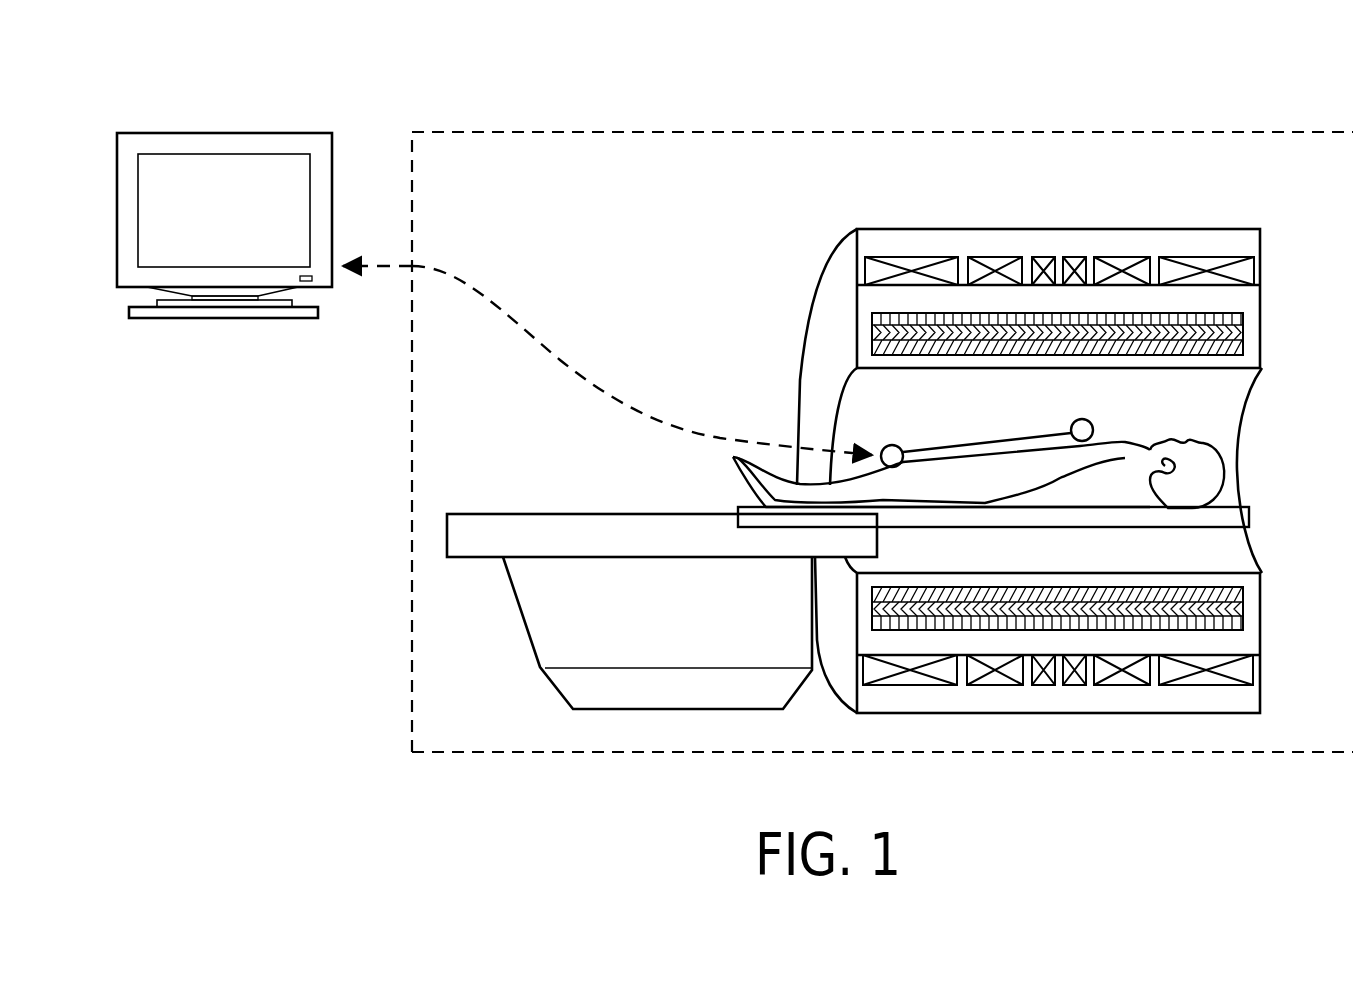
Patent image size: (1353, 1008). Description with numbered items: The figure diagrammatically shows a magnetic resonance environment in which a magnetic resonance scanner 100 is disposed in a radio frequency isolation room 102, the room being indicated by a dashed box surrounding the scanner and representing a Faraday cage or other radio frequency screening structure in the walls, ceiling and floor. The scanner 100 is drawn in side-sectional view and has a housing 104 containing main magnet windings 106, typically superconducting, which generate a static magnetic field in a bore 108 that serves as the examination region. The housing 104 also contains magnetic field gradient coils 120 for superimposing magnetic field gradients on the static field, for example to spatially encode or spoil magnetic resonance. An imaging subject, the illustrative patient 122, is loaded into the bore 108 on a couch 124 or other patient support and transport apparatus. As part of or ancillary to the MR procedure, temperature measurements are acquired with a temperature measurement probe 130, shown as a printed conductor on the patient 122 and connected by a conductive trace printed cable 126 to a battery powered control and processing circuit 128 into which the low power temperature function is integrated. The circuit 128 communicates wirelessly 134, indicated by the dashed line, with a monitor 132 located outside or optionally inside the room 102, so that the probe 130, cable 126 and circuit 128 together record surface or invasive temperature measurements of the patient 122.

The magnetic resonance scanner 100 is at (646, 316).
The radio frequency isolation room 102 is at (562, 132).
The housing 104 is at (1217, 229).
The main magnet windings 106 is at (982, 257).
The bore 108 is at (850, 420).
The magnetic field gradient coils 120 is at (1243, 322).
The patient 122 is at (1238, 470).
The couch 124 is at (520, 514).
The conductive trace printed cable 126 is at (988, 442).
The battery powered control and processing circuit 128 is at (893, 445).
The temperature measurement probe 130 is at (1093, 423).
The monitor 132 is at (222, 133).
The wireless communication 134 is at (517, 327).